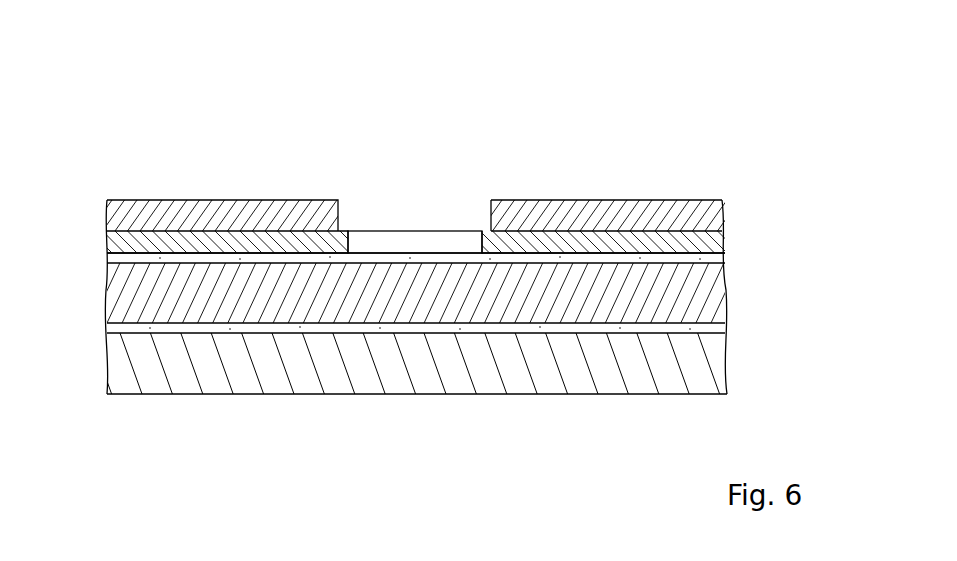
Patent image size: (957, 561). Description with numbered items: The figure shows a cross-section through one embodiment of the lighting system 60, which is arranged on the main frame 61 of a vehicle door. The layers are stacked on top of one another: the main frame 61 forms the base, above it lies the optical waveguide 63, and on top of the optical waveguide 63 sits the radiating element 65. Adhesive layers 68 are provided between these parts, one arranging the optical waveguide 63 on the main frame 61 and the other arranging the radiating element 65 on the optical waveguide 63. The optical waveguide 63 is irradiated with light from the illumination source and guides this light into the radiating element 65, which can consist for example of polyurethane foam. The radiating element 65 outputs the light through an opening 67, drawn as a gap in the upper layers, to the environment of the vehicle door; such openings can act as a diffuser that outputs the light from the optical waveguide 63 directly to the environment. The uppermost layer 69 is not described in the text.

The lighting system 60 is at (151, 129).
The main frame 61 is at (712, 365).
The optical waveguide 63 is at (712, 300).
The radiating element 65 is at (712, 245).
The opening 67 is at (407, 217).
The adhesive layers 68 is at (110, 256).
The top layer 69 is at (712, 217).